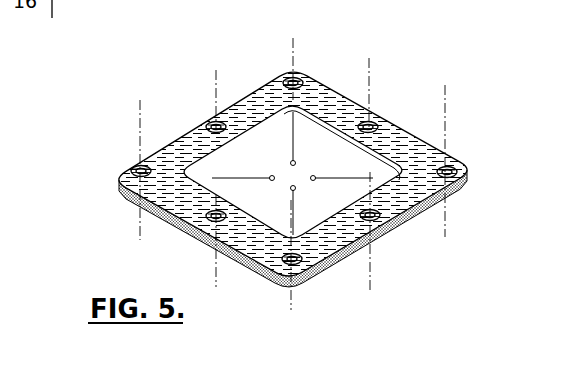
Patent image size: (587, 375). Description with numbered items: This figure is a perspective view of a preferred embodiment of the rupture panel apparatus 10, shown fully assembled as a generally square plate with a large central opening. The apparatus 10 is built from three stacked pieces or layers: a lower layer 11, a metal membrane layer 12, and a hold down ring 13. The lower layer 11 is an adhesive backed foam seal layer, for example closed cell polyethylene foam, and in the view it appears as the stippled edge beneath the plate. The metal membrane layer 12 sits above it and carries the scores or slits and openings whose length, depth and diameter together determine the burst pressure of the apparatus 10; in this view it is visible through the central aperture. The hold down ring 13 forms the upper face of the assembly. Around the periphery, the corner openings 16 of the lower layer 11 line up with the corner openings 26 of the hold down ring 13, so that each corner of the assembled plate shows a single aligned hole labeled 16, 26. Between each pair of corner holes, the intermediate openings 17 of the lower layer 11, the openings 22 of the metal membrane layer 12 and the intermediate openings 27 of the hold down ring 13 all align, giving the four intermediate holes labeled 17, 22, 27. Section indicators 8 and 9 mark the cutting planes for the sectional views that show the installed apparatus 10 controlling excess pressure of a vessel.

The rupture panel apparatus 10 is at (278, 168).
The lower layer 11 is at (462, 200).
The metal membrane layer 12 is at (268, 128).
The hold down ring 13 is at (400, 142).
The corner openings 16 is at (280, 174).
The corner openings 26 is at (296, 74).
The intermediate openings 17 is at (254, 164).
The opening 22 is at (254, 164).
The intermediate openings 27 is at (362, 122).
The section line 8 is at (355, 112).
The section line 9 is at (361, 222).